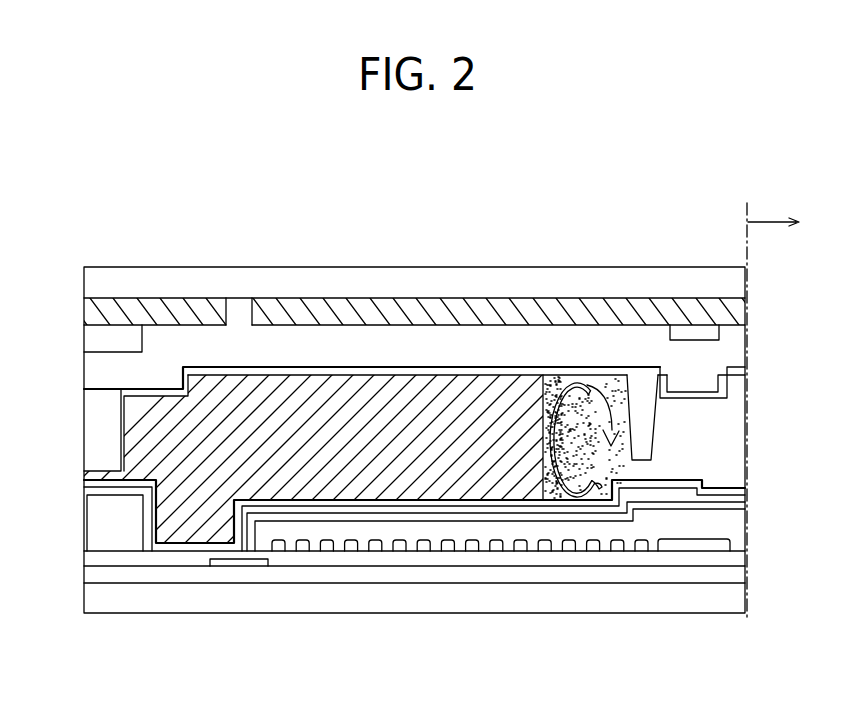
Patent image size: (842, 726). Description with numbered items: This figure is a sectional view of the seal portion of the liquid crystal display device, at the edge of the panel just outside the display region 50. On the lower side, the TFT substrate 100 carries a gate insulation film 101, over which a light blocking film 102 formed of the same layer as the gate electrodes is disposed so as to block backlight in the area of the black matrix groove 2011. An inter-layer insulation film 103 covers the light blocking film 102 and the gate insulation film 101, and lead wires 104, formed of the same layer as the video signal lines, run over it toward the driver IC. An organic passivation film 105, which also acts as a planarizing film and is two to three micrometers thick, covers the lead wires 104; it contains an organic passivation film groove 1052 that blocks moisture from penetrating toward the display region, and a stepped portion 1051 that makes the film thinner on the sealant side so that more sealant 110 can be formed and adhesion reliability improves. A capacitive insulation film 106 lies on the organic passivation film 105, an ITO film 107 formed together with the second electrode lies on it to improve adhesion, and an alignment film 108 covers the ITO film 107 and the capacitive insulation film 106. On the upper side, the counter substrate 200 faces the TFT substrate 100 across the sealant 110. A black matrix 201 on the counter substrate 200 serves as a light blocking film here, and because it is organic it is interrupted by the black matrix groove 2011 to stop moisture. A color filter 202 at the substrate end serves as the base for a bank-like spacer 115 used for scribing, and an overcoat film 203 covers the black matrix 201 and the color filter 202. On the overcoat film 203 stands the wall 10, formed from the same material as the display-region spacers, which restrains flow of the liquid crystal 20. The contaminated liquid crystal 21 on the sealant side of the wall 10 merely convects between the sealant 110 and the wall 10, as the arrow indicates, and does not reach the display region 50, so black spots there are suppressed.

The wall 10 is at (643, 387).
The liquid crystal 20 is at (695, 438).
The contaminated liquid crystal 21 is at (580, 427).
The display region 50 is at (773, 405).
The TFT substrate 100 is at (110, 603).
The gate insulation film 101 is at (167, 577).
The light blocking film 102 is at (237, 567).
The inter-layer insulation film 103 is at (288, 570).
The lead wires 104 is at (540, 548).
The organic passivation film 105 is at (108, 520).
The stepped portion 1051 is at (628, 512).
The organic passivation film groove 1052 is at (198, 520).
The capacitive insulation film 106 is at (482, 521).
The ITO film 107 is at (410, 514).
The alignment film 108 is at (513, 363).
The sealant 110 is at (440, 387).
The spacer 115 is at (100, 435).
The counter substrate 200 is at (172, 278).
The black matrix 201 is at (308, 300).
The black matrix groove 2011 is at (242, 307).
The color filter 202 is at (112, 335).
The overcoat film 203 is at (367, 345).